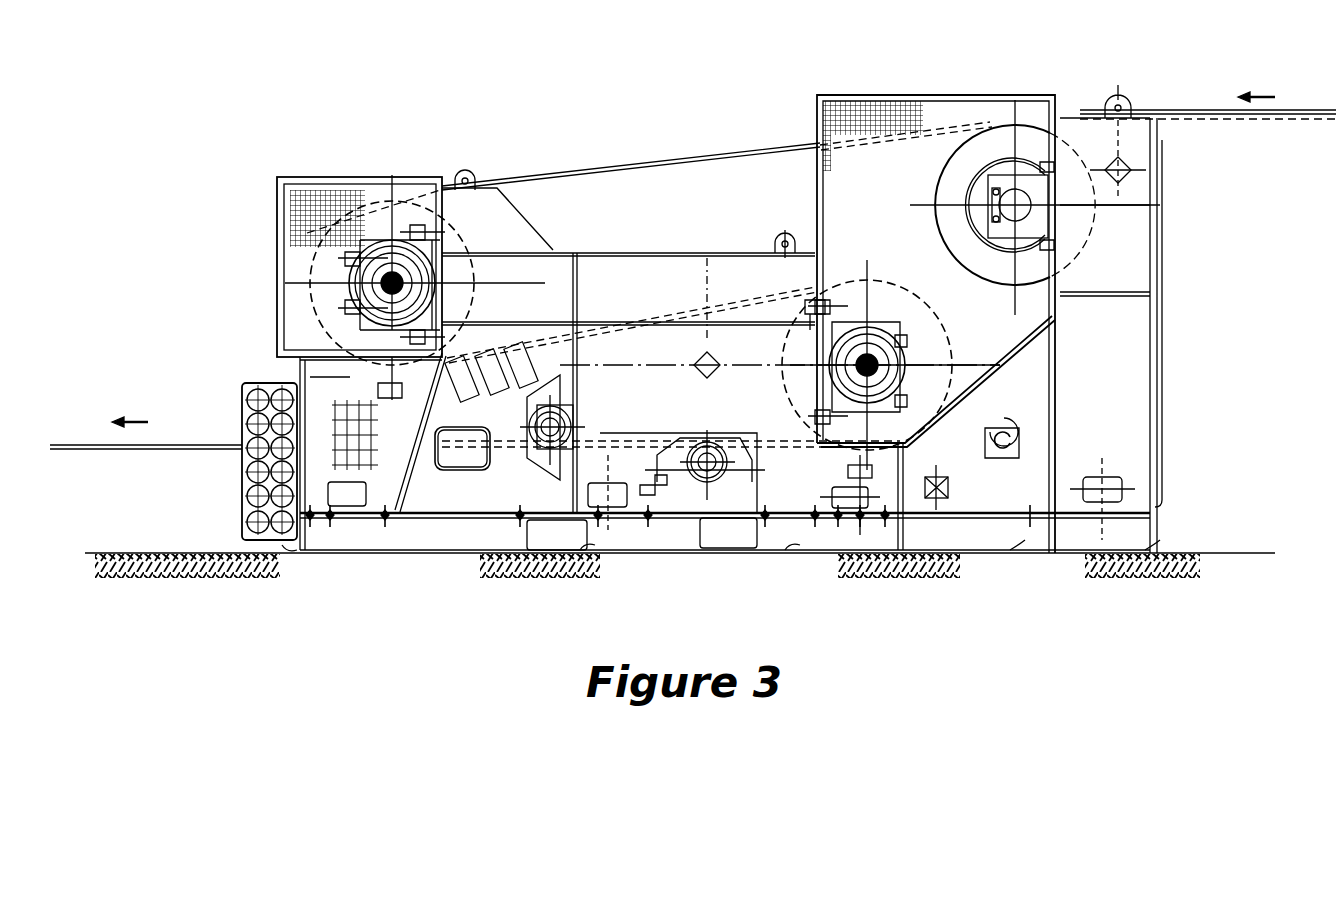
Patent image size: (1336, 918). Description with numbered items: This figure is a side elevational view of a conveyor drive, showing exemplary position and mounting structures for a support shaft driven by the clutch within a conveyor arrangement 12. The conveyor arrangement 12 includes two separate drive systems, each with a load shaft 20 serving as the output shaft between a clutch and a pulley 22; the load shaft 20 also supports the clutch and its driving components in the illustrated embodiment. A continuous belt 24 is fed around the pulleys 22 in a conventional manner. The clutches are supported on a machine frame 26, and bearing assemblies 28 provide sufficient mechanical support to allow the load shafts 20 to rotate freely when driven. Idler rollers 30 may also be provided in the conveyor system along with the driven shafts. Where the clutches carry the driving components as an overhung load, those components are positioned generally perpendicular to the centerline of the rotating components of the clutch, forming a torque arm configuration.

The conveyor arrangement 12 is at (440, 115).
The load shaft 20 is at (388, 284).
The pulley 22 is at (373, 215).
The continuous belt 24 is at (600, 168).
The machine frame 26 is at (623, 252).
The bearing assemblies 28 is at (373, 235).
The idler rollers 30 is at (988, 138).